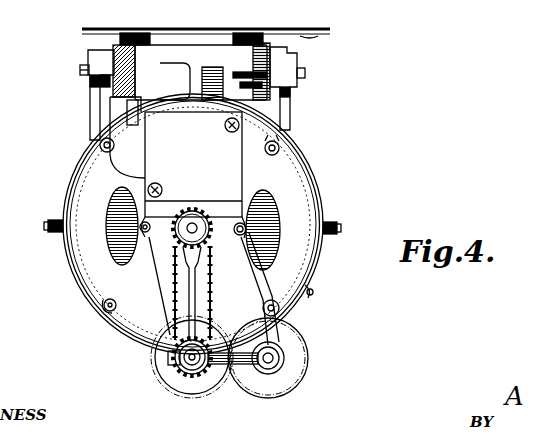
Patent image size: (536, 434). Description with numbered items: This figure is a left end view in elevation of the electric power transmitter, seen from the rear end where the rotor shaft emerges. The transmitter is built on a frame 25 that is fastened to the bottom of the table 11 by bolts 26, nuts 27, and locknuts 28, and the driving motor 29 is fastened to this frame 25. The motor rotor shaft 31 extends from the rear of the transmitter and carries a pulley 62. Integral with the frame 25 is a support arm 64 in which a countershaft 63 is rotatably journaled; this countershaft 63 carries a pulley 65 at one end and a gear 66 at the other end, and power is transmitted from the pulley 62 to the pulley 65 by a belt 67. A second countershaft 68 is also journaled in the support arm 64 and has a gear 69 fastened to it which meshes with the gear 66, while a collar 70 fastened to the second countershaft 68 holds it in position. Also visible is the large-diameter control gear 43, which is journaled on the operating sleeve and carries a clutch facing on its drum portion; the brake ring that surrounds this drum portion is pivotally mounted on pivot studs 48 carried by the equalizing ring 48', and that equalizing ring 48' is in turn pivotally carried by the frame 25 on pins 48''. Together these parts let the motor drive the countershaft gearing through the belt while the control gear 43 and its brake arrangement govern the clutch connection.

The table 11 is at (318, 36).
The frame 25 is at (197, 48).
The bolts 26 is at (140, 94).
The nuts 27 is at (226, 66).
The locknuts 28 is at (143, 78).
The driving motor 29 is at (80, 270).
The motor rotor shaft 31 is at (237, 223).
The control gear 43 is at (315, 292).
The pivot studs 48 is at (188, 217).
The equalizing ring 48' is at (200, 93).
The pins 48'' is at (198, 68).
The pulley 62 is at (188, 212).
The countershaft 63 is at (193, 372).
The support arm 64 is at (256, 265).
The pulley 65 is at (180, 370).
The gear 66 is at (178, 395).
The belt 67 is at (213, 296).
The second countershaft 68 is at (285, 382).
The gear 69 is at (257, 395).
The collar 70 is at (282, 348).